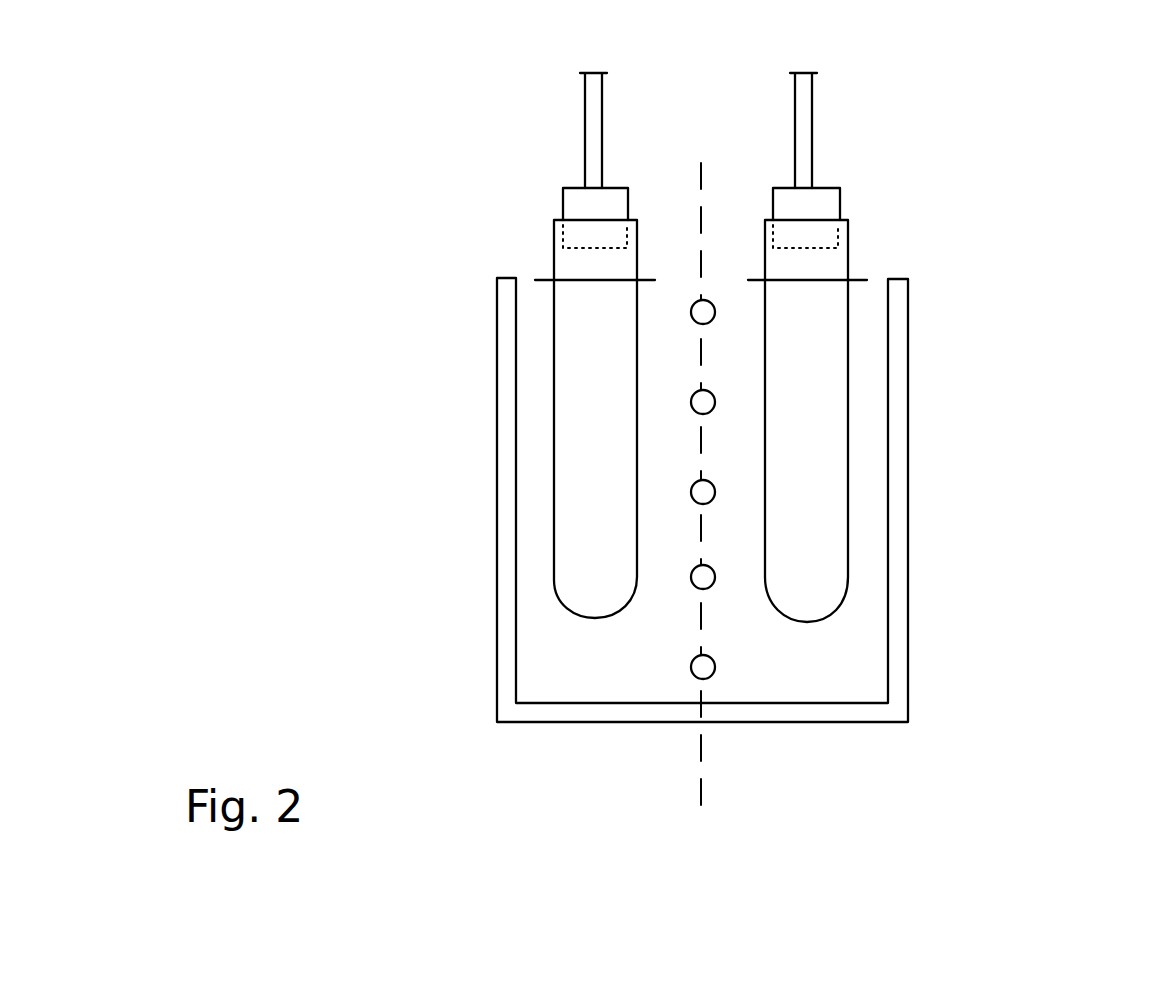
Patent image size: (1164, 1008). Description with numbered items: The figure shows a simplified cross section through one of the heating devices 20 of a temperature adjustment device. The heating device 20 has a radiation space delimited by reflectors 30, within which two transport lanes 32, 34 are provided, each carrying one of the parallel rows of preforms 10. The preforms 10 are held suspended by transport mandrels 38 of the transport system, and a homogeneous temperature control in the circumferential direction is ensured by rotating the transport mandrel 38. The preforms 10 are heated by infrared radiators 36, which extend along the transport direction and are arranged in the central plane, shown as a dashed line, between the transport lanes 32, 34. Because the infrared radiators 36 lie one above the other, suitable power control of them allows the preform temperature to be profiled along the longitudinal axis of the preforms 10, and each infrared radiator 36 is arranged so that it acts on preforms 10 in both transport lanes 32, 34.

The heating device 20 is at (455, 188).
The preform 10 is at (577, 332).
The reflector 30 is at (500, 505).
The transport lane 32 is at (590, 677).
The transport lane 34 is at (812, 675).
The infrared radiator 36 is at (690, 402).
The transport mandrel 38 is at (590, 142).